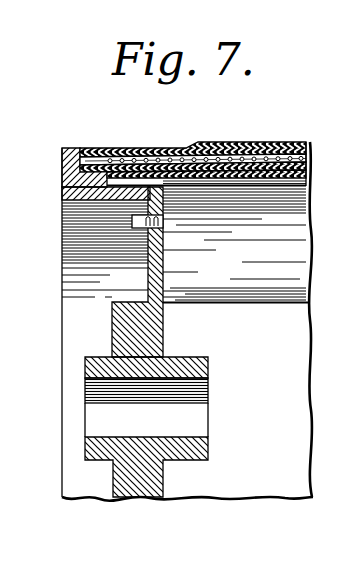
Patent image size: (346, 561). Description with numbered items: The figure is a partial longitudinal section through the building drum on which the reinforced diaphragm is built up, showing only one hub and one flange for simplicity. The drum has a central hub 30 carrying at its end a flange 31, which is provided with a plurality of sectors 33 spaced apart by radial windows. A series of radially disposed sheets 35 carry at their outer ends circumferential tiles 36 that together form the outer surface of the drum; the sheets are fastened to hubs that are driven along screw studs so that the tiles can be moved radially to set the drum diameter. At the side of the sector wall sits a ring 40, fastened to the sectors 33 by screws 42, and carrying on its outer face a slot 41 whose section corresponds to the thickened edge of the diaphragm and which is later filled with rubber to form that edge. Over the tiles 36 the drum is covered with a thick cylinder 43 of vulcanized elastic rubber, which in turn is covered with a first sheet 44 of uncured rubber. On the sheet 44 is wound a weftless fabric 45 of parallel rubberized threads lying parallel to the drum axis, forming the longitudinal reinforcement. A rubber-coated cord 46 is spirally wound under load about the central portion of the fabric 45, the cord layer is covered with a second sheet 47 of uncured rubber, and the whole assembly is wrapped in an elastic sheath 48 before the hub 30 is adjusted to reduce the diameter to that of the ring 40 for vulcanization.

The central hub 30 is at (88, 369).
The flange 31 is at (117, 339).
The sector 33 is at (162, 283).
The radially disposed sheet 35 is at (276, 289).
The circumferential tile 36 is at (251, 187).
The ring 40 is at (62, 172).
The slot 41 is at (62, 184).
The screw 42 is at (165, 225).
The cylinder of vulcanized elastic rubber 43 is at (283, 178).
The first sheet of uncured rubber 44 is at (299, 179).
The weftless fabric 45 is at (306, 167).
The cord 46 is at (270, 157).
The second sheet of uncured rubber 47 is at (307, 150).
The elastic sheath 48 is at (232, 145).